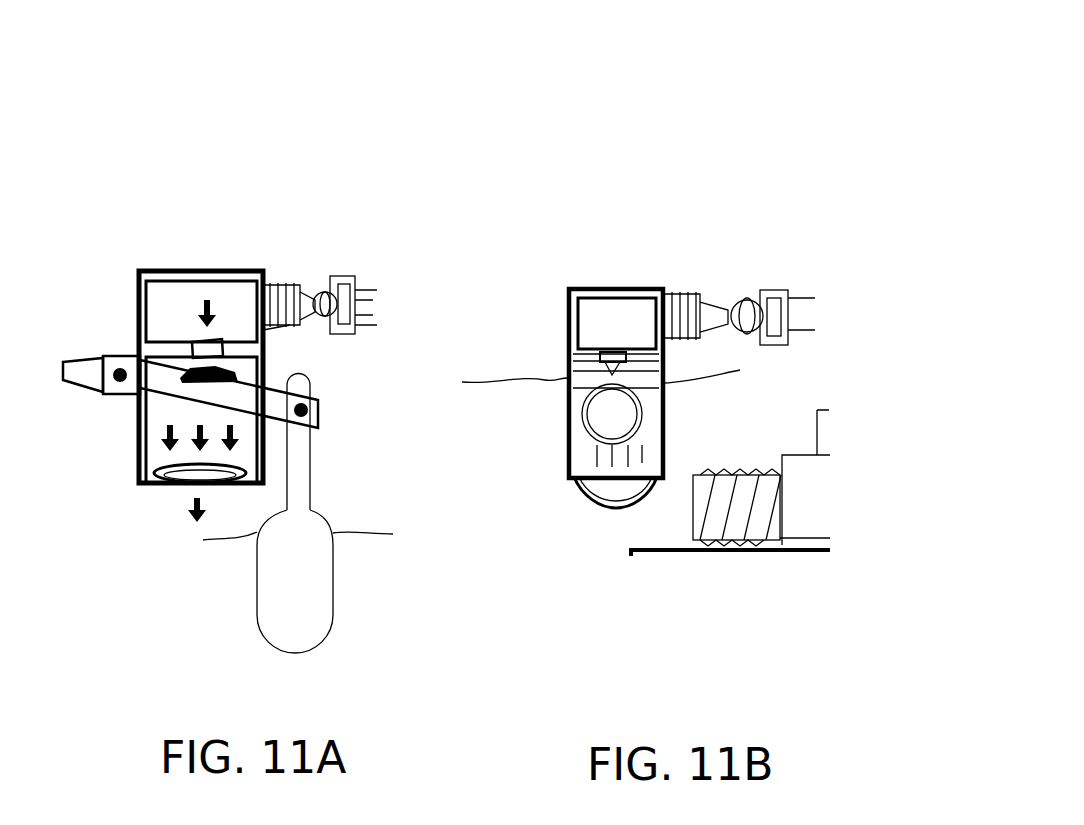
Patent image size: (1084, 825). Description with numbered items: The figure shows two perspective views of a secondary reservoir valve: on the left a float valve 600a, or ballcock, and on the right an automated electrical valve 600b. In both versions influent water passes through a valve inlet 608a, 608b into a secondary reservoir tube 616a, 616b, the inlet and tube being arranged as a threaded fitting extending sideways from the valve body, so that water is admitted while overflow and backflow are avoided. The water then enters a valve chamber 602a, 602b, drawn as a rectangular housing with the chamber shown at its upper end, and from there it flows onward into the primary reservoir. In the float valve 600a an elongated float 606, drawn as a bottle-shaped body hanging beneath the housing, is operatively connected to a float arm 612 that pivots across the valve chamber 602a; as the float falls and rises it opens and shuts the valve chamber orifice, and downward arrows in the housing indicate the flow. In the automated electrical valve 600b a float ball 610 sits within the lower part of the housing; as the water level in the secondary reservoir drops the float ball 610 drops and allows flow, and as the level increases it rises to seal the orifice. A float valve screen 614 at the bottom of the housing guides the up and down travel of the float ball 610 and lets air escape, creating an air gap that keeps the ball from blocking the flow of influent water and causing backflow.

In FIG. 11A, the float valve 600a is at (275, 81).
In FIG. 11B, the automated electrical valve 600b is at (695, 88).
In FIG. 11A, the valve chamber 602a is at (193, 305).
In FIG. 11B, the valve chamber 602a is at (615, 365).
In FIG. 11B, the valve chamber 602b is at (588, 320).
In FIG. 11A, the elongated float 606 is at (333, 603).
In FIG. 11A, the valve inlet 608a is at (280, 326).
In FIG. 11B, the valve inlet 608b is at (715, 335).
In FIG. 11B, the float ball 610 is at (730, 482).
In FIG. 11A, the float arm 612 is at (182, 395).
In FIG. 11B, the float valve screen 614 is at (578, 455).
In FIG. 11A, the secondary reservoir tube 616a is at (357, 292).
In FIG. 11B, the secondary reservoir tube 616b is at (798, 298).